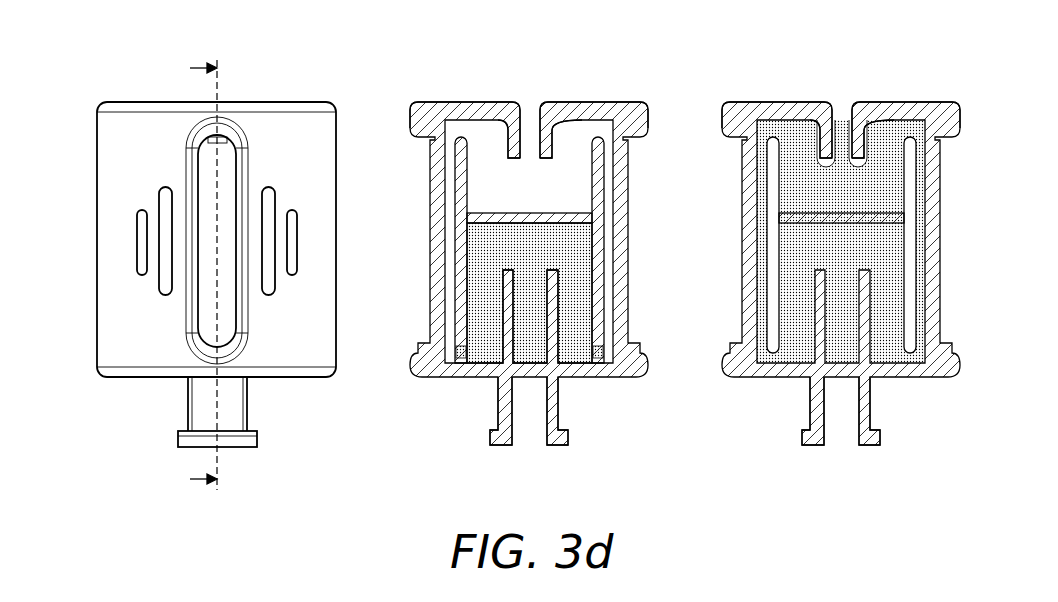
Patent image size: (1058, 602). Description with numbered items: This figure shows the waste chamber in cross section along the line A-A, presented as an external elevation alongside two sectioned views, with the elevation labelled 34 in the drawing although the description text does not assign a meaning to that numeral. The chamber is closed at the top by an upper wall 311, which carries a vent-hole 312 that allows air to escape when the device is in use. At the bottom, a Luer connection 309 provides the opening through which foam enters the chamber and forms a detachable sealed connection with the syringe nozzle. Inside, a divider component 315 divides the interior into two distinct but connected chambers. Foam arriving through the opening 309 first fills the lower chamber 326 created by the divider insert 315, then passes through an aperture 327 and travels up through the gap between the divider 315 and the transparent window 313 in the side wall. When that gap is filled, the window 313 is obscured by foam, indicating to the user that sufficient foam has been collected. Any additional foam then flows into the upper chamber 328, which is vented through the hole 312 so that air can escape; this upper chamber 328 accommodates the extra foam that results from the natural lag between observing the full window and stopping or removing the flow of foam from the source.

The housing 34 is at (107, 165).
The upper wall 311 is at (428, 102).
The vent-hole 312 is at (527, 108).
The transparent window 313 is at (628, 272).
The divider component 315 is at (604, 155).
The lower chamber 326 is at (528, 243).
The aperture 327 is at (463, 356).
The Luer connection 309 is at (530, 438).
The upper chamber 328 is at (887, 145).